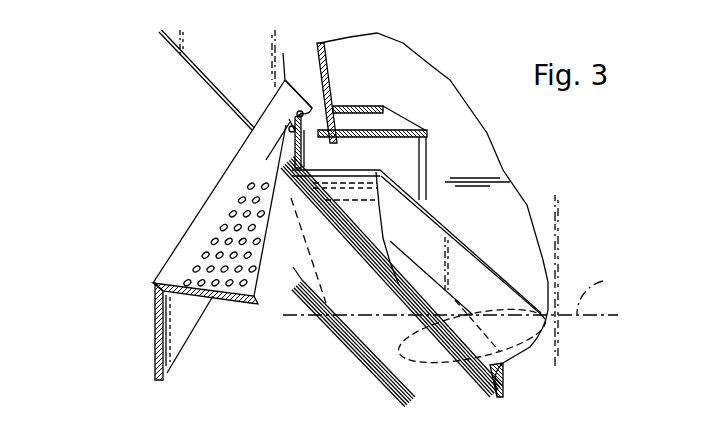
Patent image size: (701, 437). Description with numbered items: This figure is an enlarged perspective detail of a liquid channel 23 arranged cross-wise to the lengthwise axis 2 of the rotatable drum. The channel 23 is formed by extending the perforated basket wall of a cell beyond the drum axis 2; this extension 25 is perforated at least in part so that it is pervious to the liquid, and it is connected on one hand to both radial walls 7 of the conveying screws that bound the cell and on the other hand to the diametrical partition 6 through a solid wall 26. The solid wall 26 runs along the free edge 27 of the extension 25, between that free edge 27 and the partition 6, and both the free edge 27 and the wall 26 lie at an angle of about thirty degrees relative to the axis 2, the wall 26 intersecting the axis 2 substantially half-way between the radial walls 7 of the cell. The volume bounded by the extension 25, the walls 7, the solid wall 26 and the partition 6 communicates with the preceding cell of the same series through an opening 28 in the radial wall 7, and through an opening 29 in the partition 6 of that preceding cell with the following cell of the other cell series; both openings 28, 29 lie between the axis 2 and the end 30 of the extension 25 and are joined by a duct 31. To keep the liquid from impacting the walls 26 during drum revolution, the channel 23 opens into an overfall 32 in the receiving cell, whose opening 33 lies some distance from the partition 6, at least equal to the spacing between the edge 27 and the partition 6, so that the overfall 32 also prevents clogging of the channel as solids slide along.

The lengthwise axis 2 is at (595, 282).
The partition 6 is at (148, 176).
The radial walls 7 is at (550, 382).
The channel 23 is at (450, 62).
The extension 25 is at (247, 142).
The solid wall 26 is at (177, 324).
The free edge 27 is at (223, 171).
The opening 28 is at (310, 138).
The opening 29 is at (360, 211).
The end 30 is at (299, 81).
The duct 31 is at (392, 124).
The overfall 32 is at (382, 239).
The opening 33 is at (438, 297).